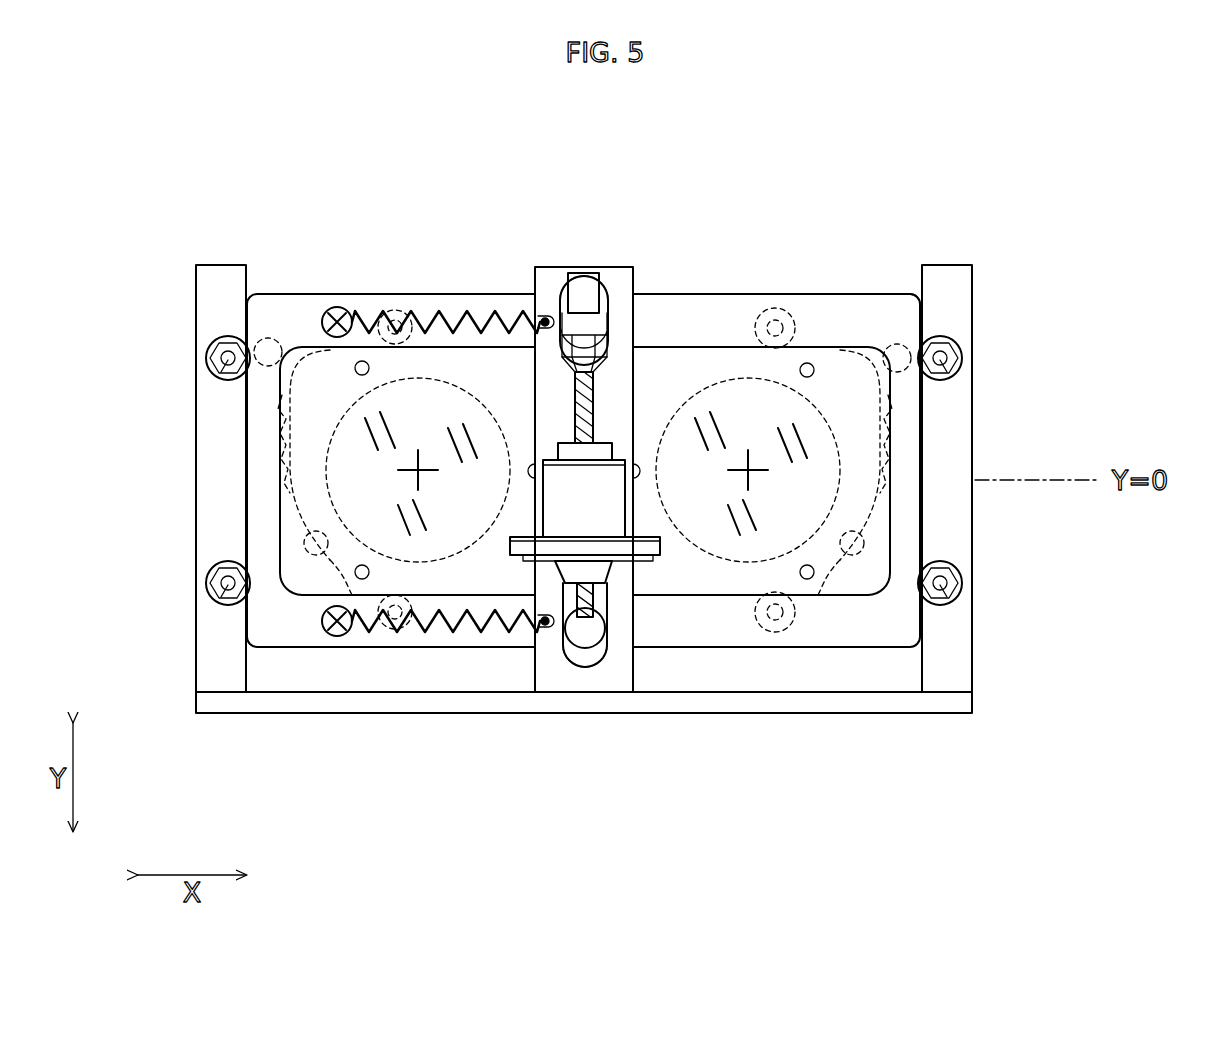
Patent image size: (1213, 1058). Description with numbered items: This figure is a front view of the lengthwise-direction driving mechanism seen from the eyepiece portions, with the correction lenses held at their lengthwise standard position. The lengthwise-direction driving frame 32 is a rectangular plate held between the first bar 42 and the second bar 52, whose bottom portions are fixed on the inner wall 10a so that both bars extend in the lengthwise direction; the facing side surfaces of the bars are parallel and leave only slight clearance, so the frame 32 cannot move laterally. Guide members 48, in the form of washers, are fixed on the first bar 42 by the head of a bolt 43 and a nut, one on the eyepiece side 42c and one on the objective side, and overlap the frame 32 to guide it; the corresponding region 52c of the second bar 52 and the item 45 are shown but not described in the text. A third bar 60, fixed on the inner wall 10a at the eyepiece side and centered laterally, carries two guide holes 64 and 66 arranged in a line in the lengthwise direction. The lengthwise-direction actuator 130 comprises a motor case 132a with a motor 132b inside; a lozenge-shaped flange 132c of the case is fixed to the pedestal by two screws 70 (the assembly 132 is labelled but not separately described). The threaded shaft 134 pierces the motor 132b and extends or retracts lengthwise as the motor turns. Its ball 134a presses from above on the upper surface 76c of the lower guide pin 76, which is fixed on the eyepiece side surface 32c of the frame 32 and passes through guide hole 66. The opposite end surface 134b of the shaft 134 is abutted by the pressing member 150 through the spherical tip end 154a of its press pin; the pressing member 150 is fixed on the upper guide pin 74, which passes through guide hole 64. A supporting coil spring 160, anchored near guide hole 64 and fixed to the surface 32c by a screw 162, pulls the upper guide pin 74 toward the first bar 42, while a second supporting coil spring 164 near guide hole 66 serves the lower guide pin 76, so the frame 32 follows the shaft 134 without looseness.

The inner wall 10a is at (926, 713).
The second bar 52 is at (222, 262).
The first bar 42 is at (945, 262).
The lower portion of left post 52c is at (215, 672).
The eyepiece side of the first bar 42c is at (955, 672).
The lengthwise-direction driving frame 32 is at (800, 290).
The eyepiece side surface of the frame 32c is at (855, 310).
The guide member 48 is at (215, 342).
The hexagonal bolt 45 is at (206, 358).
The bolt 43 is at (213, 376).
The screw 162 is at (337, 306).
The supporting coil spring 160 is at (420, 312).
The supporting coil spring 164 is at (350, 638).
The lengthwise-direction actuator 130 is at (560, 426).
The third bar 60 is at (583, 262).
The guide hole 64 is at (608, 310).
The pressing member 150 is at (563, 280).
The shaft 134 is at (612, 330).
The side surface of the shaft 134b is at (612, 300).
The tip end of the press pin 154a is at (557, 352).
The upper guide pin 74 is at (600, 396).
The slide block 132 is at (628, 497).
The motor case 132a is at (545, 493).
The motor 132b is at (660, 552).
The flange 132c is at (522, 560).
The screw 70 is at (548, 530).
The lower guide pin 76 is at (568, 650).
The upper surface of the tip end portion 76c is at (608, 664).
The ball 134a is at (576, 606).
The guide hole 66 is at (588, 646).